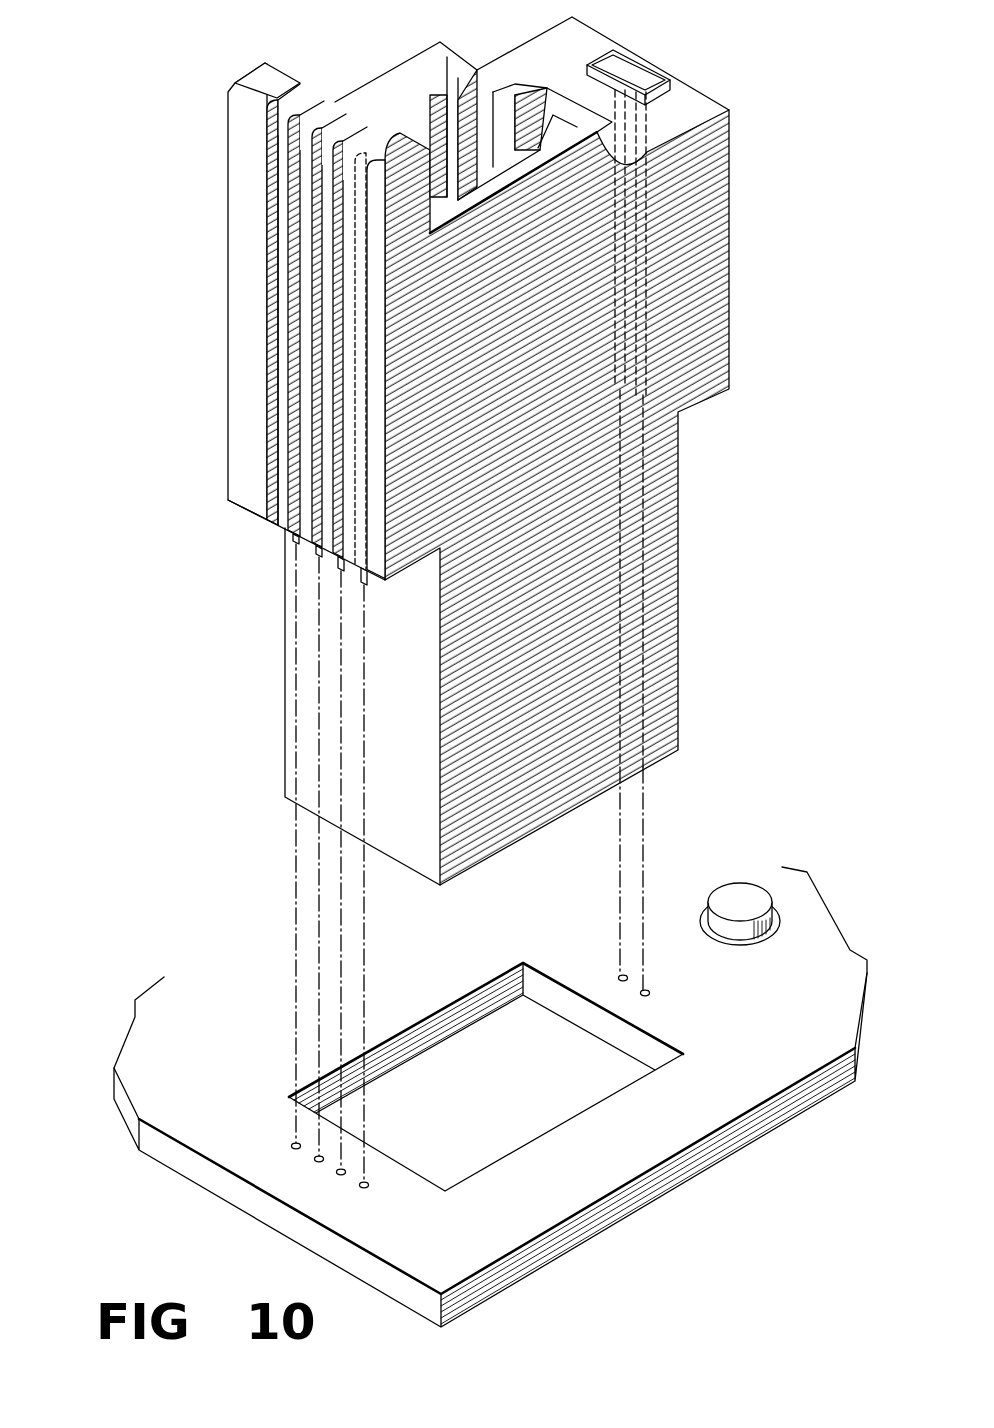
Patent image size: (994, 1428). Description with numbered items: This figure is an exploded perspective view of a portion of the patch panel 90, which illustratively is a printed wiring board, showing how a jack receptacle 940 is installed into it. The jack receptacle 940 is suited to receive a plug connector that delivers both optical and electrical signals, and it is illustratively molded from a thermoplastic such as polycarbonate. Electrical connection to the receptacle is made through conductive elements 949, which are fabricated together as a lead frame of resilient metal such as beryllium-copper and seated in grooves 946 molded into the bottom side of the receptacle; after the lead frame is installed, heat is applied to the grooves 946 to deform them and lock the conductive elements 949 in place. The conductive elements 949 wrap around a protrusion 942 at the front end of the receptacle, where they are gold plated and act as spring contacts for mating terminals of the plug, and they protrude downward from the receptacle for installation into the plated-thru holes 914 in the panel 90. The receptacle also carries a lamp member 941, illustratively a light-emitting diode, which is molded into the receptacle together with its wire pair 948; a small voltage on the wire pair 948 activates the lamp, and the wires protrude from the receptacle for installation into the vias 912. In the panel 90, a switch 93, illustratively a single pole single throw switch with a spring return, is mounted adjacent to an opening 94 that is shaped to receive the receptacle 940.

The patch panel 90 is at (457, 1234).
The switch 93 is at (727, 893).
The opening 94 is at (489, 1030).
The vias 912 is at (618, 972).
The plated-thru holes 914 is at (292, 1140).
The jack receptacle 940 is at (138, 139).
The lamp member 941 is at (636, 62).
The protrusion 942 is at (232, 92).
The grooves 946 is at (293, 268).
The wire pair 948 is at (640, 296).
The conductive elements 949 is at (317, 550).